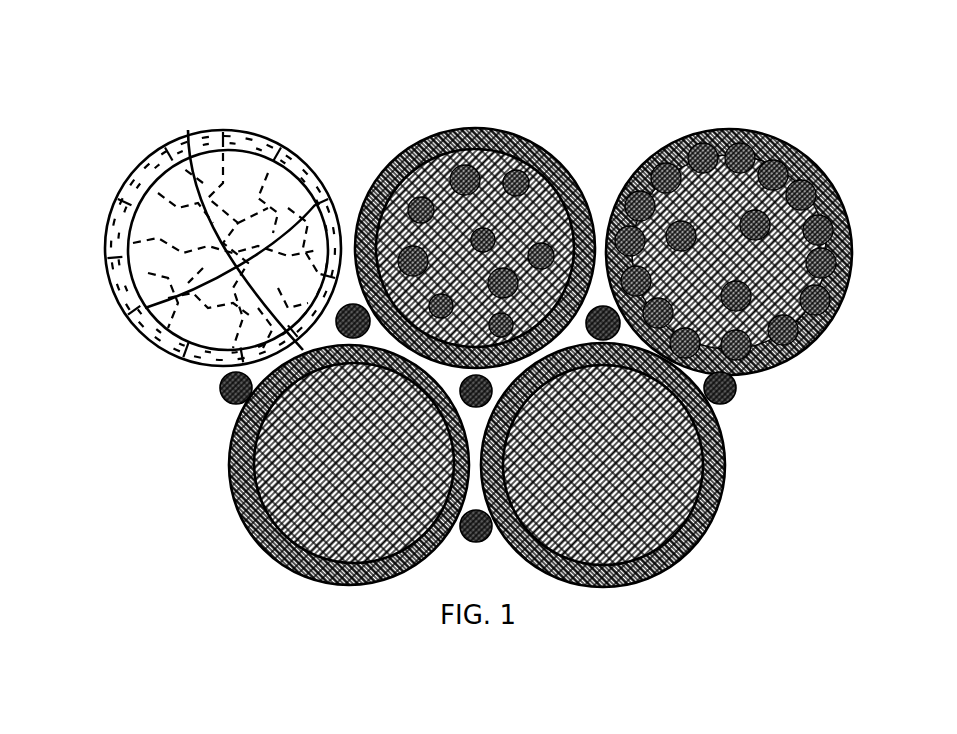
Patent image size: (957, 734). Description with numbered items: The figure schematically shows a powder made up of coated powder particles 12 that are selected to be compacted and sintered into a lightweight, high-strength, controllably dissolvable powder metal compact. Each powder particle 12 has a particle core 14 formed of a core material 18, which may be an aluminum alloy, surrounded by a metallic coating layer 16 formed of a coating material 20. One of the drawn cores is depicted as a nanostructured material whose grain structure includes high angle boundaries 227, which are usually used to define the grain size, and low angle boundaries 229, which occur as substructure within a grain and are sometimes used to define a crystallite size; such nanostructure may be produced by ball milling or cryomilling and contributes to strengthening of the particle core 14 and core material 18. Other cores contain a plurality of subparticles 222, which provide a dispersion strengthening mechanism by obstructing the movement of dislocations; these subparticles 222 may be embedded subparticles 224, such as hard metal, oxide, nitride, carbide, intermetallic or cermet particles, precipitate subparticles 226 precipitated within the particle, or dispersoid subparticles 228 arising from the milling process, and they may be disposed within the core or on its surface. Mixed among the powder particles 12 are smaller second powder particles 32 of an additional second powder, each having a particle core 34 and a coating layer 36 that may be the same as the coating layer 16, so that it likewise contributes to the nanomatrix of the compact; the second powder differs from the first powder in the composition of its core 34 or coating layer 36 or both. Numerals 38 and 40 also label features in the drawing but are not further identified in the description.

The powder particle 12 is at (454, 326).
The particle core 14 is at (286, 415).
The metallic coating layer 16 is at (127, 307).
The core material 18 is at (247, 427).
The coating material 20 is at (226, 482).
The second powder particle 32 is at (613, 315).
The particle core of second powder particle 34 is at (782, 355).
The coating layer of second powder particle 36 is at (694, 259).
The fiber coating 38 is at (622, 330).
The coating of particle-containing fiber 40 is at (545, 304).
The subparticle 222 is at (590, 189).
The embedded subparticle 224 is at (451, 159).
The precipitate subparticle 226 is at (411, 192).
The high angle boundary 227 is at (190, 172).
The dispersoid subparticle 228 is at (509, 161).
The low angle boundary 229 is at (245, 134).